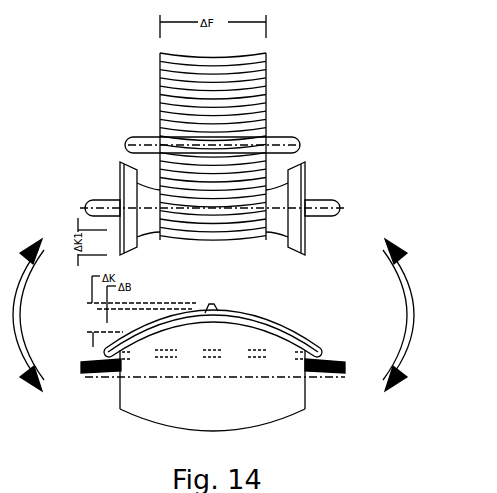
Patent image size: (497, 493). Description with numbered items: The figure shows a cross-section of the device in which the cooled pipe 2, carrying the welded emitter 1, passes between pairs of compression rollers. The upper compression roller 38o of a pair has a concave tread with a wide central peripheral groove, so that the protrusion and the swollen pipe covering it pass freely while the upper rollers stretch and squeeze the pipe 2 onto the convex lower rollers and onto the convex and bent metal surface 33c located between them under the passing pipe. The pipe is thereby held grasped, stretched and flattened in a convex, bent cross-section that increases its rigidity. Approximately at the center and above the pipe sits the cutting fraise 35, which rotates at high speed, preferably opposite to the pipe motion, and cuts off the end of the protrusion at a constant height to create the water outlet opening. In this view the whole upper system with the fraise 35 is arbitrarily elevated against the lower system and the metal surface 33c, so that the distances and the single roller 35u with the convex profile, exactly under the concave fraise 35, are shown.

The emitter 1 is at (216, 311).
The cooled pipe 2 is at (256, 320).
The convex and bent metal surface 33c is at (90, 362).
The cutting fraise 35 is at (283, 62).
The single roller with convex profile 35u is at (280, 392).
The upper compression roller 38o is at (120, 173).